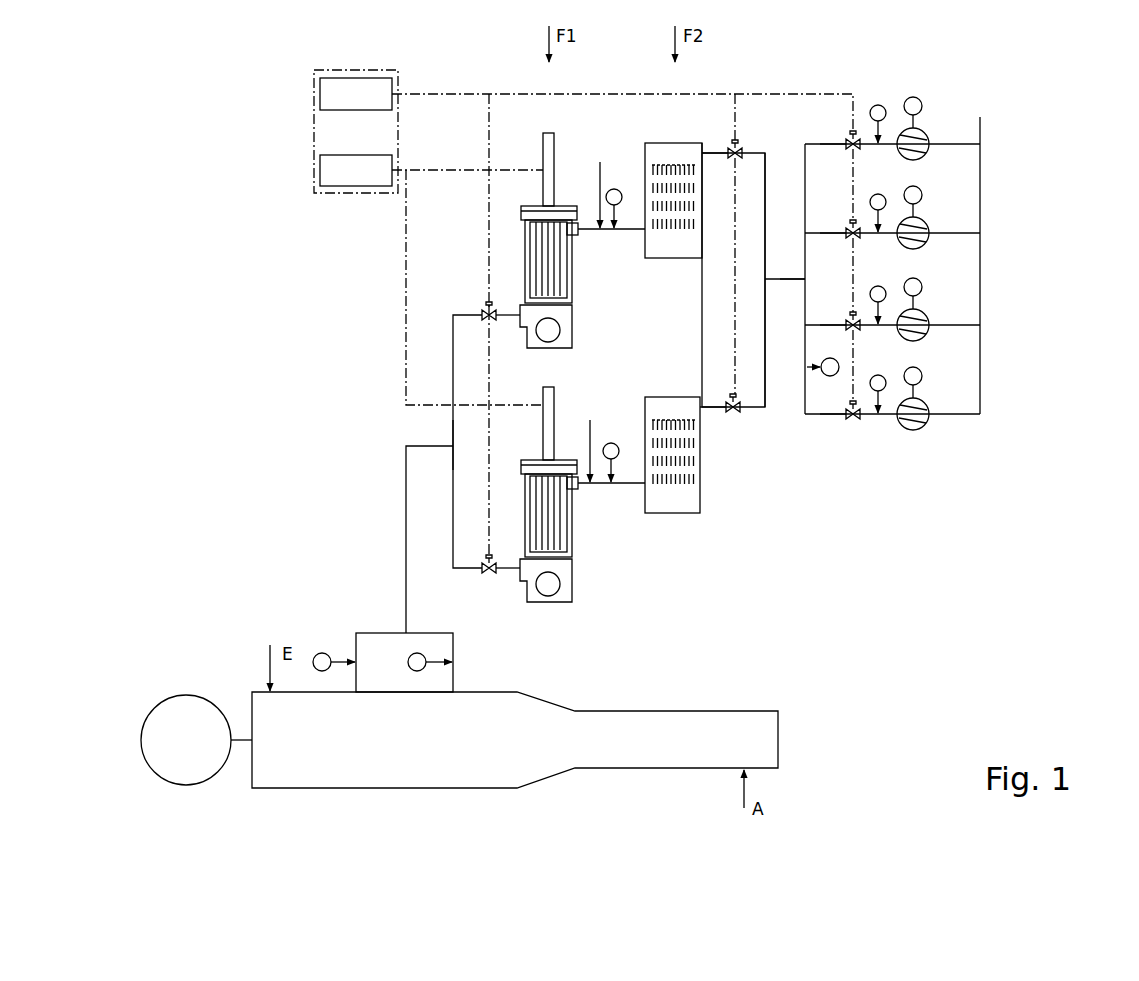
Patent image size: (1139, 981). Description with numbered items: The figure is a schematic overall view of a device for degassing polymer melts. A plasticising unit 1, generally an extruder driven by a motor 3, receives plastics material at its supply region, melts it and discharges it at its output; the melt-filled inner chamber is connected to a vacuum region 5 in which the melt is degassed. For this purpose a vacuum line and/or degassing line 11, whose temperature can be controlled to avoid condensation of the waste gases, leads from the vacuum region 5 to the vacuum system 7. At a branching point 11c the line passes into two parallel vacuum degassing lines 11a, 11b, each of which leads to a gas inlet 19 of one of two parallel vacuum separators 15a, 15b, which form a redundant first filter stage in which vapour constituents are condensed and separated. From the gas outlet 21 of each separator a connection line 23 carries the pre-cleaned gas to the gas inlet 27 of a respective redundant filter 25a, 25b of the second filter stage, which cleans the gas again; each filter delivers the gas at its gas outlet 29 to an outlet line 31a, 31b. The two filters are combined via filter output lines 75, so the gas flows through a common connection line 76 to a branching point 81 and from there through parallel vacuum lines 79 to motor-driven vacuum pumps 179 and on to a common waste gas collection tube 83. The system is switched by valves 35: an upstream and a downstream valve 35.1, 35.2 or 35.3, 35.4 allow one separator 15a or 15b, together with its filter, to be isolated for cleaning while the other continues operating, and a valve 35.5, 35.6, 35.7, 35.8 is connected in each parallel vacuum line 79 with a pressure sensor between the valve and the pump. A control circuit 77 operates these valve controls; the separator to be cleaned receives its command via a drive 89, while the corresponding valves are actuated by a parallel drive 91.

The plasticising unit 1 is at (359, 791).
The motor 3 is at (186, 787).
The vacuum region 5 is at (353, 637).
The vacuum system 7 is at (940, 336).
The vacuum line and/or degassing line 11 is at (403, 513).
The vacuum degassing line 11a is at (450, 372).
The vacuum degassing line 11b is at (450, 505).
The branching point 11c is at (450, 446).
The vacuum separator 15a is at (574, 333).
The vacuum separator 15b is at (574, 586).
The gas inlet 19 is at (519, 319).
The gas outlet 21 is at (579, 234).
The connection line 23 is at (609, 318).
The filter 25a is at (673, 261).
The filter 25b is at (674, 516).
The gas inlet 27 is at (645, 233).
The gas outlet 29 is at (704, 150).
The outlet line 31a is at (717, 152).
The outlet line 31b is at (716, 410).
The valve 35 is at (667, 301).
The valve 35.1 is at (484, 303).
The valve 35.2 is at (741, 149).
The valve 35.3 is at (484, 556).
The valve 35.4 is at (742, 412).
The valve 35.5 is at (859, 148).
The valve 35.6 is at (862, 238).
The valve 35.7 is at (862, 330).
The valve 35.8 is at (861, 418).
The filter output line 75 is at (768, 162).
The common connection line 76 is at (780, 285).
The control circuit 77 is at (330, 206).
The vacuum line 79 is at (828, 141).
The branching point 81 is at (803, 276).
The waste gas collection tube 83 is at (984, 118).
The drive 89 is at (356, 170).
The drive 91 is at (356, 94).
The vacuum pump 179 is at (925, 431).